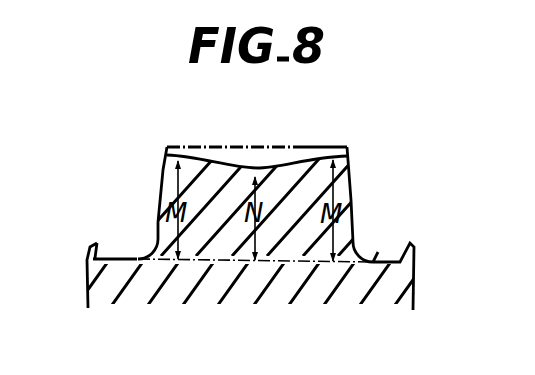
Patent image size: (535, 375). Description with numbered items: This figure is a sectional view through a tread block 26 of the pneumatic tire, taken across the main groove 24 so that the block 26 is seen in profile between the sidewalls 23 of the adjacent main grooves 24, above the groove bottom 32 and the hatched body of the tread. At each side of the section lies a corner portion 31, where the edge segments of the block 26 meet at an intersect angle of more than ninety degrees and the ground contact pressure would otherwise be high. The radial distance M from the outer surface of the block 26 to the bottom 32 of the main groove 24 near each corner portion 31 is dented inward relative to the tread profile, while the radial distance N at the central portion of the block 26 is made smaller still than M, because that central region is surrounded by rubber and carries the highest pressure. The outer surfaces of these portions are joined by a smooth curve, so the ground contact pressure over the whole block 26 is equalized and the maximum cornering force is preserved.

The sidewall 23 is at (161, 184).
The main groove 24 is at (97, 243).
The block 26 is at (295, 168).
The corner portion 31 is at (167, 147).
The bottom 32 is at (380, 263).